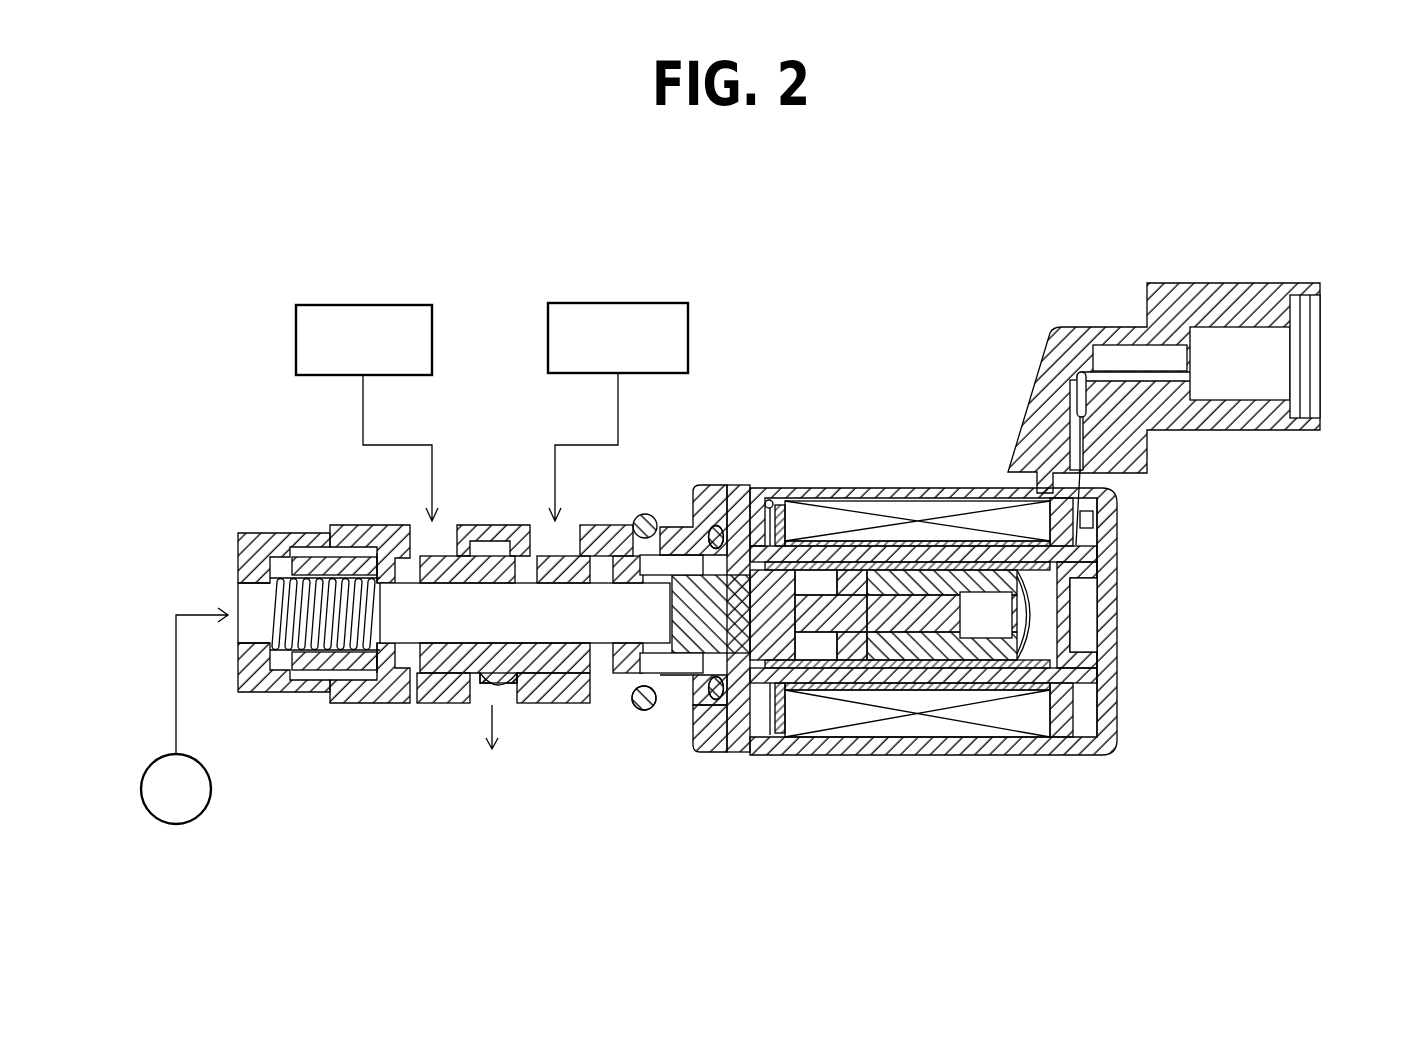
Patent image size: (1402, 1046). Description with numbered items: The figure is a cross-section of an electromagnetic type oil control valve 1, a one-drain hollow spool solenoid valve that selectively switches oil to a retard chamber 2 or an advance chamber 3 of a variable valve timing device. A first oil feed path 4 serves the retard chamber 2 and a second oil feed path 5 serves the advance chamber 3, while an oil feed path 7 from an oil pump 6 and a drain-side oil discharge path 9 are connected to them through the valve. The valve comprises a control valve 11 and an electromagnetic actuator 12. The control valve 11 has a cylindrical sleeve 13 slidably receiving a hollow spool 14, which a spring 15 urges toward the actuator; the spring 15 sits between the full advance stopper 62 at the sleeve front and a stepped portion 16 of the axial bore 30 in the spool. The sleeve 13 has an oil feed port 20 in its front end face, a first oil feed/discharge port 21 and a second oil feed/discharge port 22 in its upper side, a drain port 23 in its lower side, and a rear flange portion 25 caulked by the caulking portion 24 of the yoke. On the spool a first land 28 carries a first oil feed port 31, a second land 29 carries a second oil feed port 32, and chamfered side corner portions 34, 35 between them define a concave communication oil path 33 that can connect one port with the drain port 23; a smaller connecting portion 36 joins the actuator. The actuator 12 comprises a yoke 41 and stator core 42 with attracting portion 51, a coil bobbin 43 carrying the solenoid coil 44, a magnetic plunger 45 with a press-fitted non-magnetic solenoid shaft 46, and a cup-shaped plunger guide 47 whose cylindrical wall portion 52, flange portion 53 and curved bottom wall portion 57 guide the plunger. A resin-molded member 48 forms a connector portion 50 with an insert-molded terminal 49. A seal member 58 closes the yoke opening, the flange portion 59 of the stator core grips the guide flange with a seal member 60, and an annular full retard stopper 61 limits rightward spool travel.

The electromagnetic type oil control valve 1 is at (208, 284).
The retard chamber 2 is at (357, 305).
The advance chamber 3 is at (617, 303).
The first oil feed path 4 is at (363, 414).
The second oil feed path 5 is at (618, 412).
The oil pump 6 is at (213, 815).
The oil feed path 7 is at (157, 615).
The oil discharge path 9 is at (492, 726).
The control valve 11 is at (207, 489).
The electromagnetic actuator 12 is at (763, 468).
The sleeve 13 is at (265, 535).
The hollow spool 14 is at (637, 706).
The spring 15 is at (290, 664).
The stepped portion 16 is at (366, 670).
The oil feed port 20 is at (245, 625).
The first oil feed/discharge port 21 is at (415, 528).
The second oil feed/discharge port 22 is at (545, 540).
The drain port 23 is at (510, 690).
The caulking portion 24 is at (707, 500).
The flange portion 25 is at (725, 722).
The first land 28 is at (343, 670).
The second land 29 is at (625, 660).
The axial bore 30 is at (648, 535).
The first oil feed port 31 is at (405, 665).
The second oil feed port 32 is at (598, 570).
The communication oil path 33 is at (485, 530).
The side corner portion 34 is at (425, 705).
The side corner portion 35 is at (560, 685).
The connecting portion 36 is at (690, 645).
The yoke 41 is at (1112, 520).
The stator core 42 is at (852, 512).
The coil bobbin 43 is at (1068, 738).
The solenoid coil 44 is at (1003, 722).
The plunger 45 is at (960, 700).
The solenoid shaft 46 is at (905, 705).
The plunger guide 47 is at (1085, 595).
The resin-molded member 48 is at (1012, 455).
The terminal 49 is at (1200, 320).
The connector portion 50 is at (1295, 290).
The attracting portion 51 is at (893, 512).
The cylindrical wall portion 52 is at (930, 512).
The flange portion 53 is at (778, 505).
The curved bottom wall portion 57 is at (1175, 609).
The seal member 58 is at (1100, 632).
The flange portion 59 is at (742, 745).
The seal member 60 is at (786, 730).
The full retard stopper 61 is at (812, 508).
The full advance stopper 62 is at (243, 568).